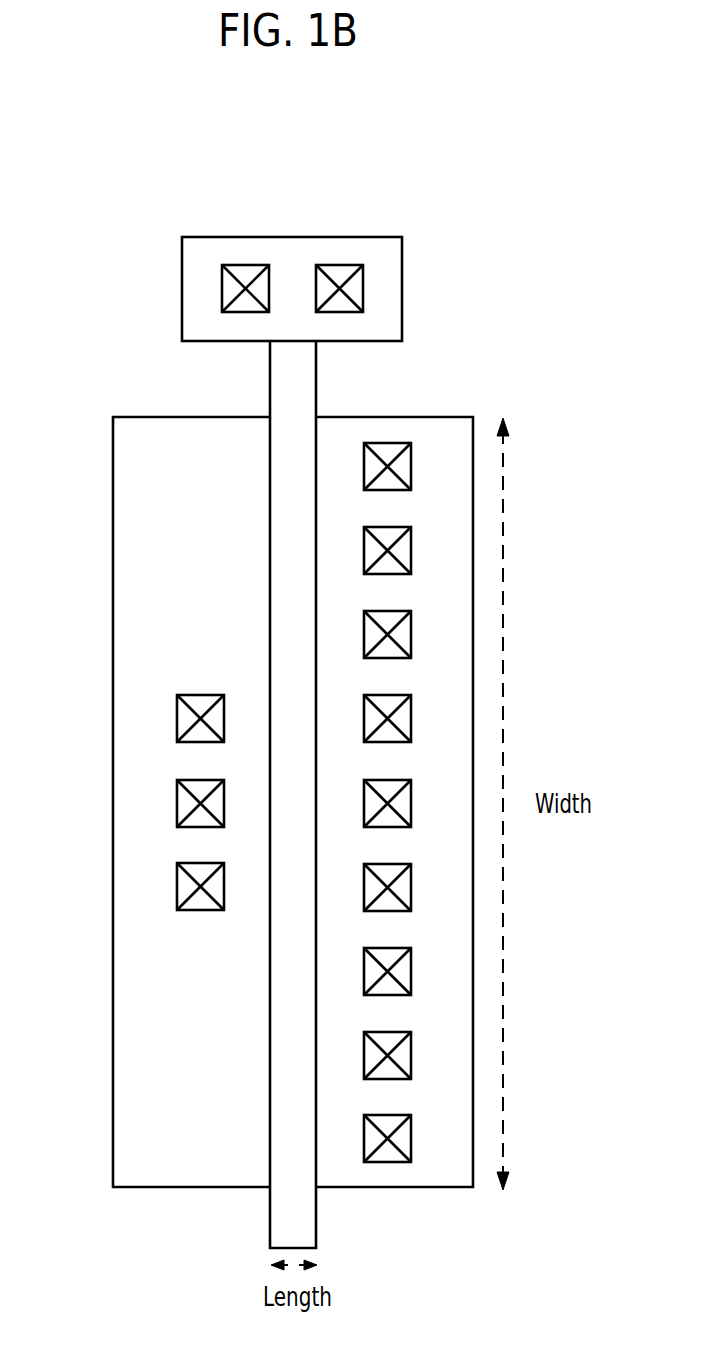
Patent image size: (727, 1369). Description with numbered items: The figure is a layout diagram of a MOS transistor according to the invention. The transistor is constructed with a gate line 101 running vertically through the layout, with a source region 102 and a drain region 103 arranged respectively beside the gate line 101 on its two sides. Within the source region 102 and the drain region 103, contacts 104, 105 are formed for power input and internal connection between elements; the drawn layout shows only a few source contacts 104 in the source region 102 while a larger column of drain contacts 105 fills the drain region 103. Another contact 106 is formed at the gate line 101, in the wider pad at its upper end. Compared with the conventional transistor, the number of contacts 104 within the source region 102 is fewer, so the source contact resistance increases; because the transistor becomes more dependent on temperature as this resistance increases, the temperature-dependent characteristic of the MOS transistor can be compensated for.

The gate line 101 is at (293, 381).
The source region 102 is at (135, 545).
The drain region 103 is at (452, 438).
The source contacts 104 is at (186, 718).
The drain contacts 105 is at (386, 456).
The gate contact 106 is at (337, 276).